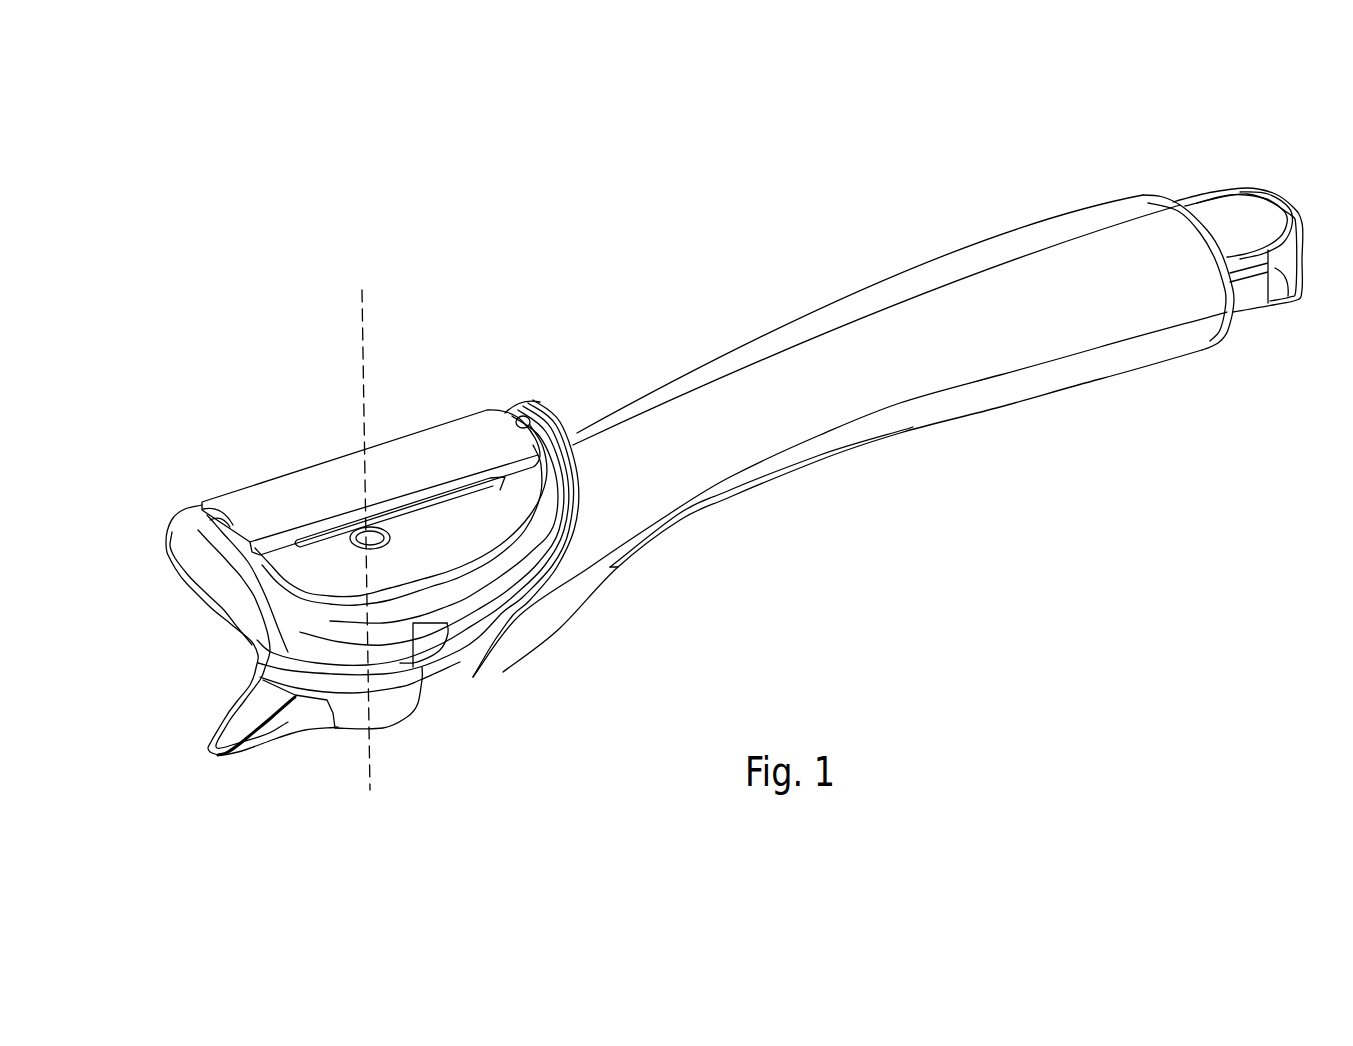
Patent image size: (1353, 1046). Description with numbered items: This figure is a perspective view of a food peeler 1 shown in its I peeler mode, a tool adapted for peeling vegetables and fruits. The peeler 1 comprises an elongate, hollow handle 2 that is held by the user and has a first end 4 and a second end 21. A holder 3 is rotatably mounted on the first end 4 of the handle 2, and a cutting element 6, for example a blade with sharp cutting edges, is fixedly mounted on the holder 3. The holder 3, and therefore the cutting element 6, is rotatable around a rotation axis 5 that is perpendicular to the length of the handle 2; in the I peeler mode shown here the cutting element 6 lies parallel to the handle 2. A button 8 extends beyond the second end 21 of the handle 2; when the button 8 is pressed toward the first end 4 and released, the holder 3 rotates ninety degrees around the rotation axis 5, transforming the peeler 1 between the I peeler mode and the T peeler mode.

The food peeler 1 is at (285, 257).
The handle 2 is at (857, 310).
The second end 21 is at (1118, 355).
The holder 3 is at (240, 602).
The first end 4 is at (320, 693).
The rotation axis 5 is at (363, 397).
The cutting element 6 is at (423, 462).
The button 8 is at (1248, 208).